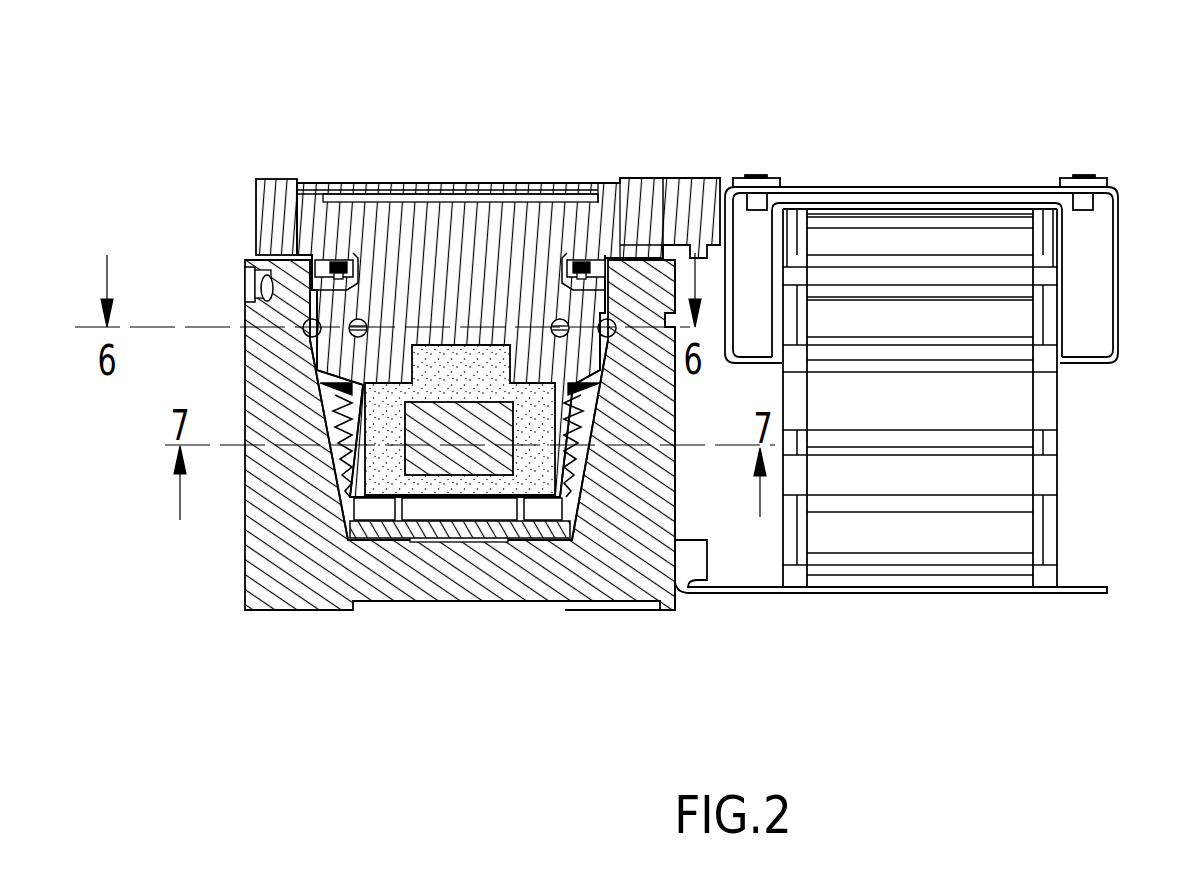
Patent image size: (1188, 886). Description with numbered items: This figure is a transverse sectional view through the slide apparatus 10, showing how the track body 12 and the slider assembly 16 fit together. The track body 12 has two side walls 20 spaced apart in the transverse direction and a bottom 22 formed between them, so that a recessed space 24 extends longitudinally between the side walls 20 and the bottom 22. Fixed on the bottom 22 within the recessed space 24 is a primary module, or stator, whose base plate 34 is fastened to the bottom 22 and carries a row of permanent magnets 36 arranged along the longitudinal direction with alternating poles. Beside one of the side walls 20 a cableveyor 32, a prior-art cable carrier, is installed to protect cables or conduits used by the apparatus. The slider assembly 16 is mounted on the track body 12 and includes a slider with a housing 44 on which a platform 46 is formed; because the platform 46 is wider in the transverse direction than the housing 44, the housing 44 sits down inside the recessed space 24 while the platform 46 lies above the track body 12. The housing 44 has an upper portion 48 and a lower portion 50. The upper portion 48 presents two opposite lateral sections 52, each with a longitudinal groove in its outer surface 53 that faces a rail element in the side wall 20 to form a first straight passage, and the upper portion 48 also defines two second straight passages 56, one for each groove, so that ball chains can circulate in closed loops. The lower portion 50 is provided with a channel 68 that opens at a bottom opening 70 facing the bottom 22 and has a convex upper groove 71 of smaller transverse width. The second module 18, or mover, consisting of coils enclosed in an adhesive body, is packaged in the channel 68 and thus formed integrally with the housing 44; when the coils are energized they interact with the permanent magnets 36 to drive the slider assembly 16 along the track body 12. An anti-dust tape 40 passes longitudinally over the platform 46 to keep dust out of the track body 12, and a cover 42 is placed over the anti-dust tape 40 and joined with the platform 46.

The slide apparatus 10 is at (193, 623).
The track body 12 is at (268, 638).
The slider assembly 16 is at (287, 147).
The second module 18 is at (418, 512).
The side walls 20 is at (263, 520).
The bottom 22 is at (542, 583).
The recessed space 24 is at (337, 452).
The cableveyor 32 is at (1087, 453).
The base plate 34 is at (457, 535).
The permanent magnets 36 is at (500, 513).
The anti-dust tape 40 is at (378, 200).
The cover 42 is at (560, 260).
The housing 44 is at (333, 360).
The platform 46 is at (482, 300).
The upper portion 48 is at (490, 280).
The lower portion 50 is at (575, 500).
The lateral sections 52 is at (580, 357).
The outer surface 53 is at (243, 310).
The second straight passages 56 is at (358, 318).
The channel 68 is at (562, 447).
The bottom opening 70 is at (377, 502).
The convex upper groove 71 is at (462, 342).